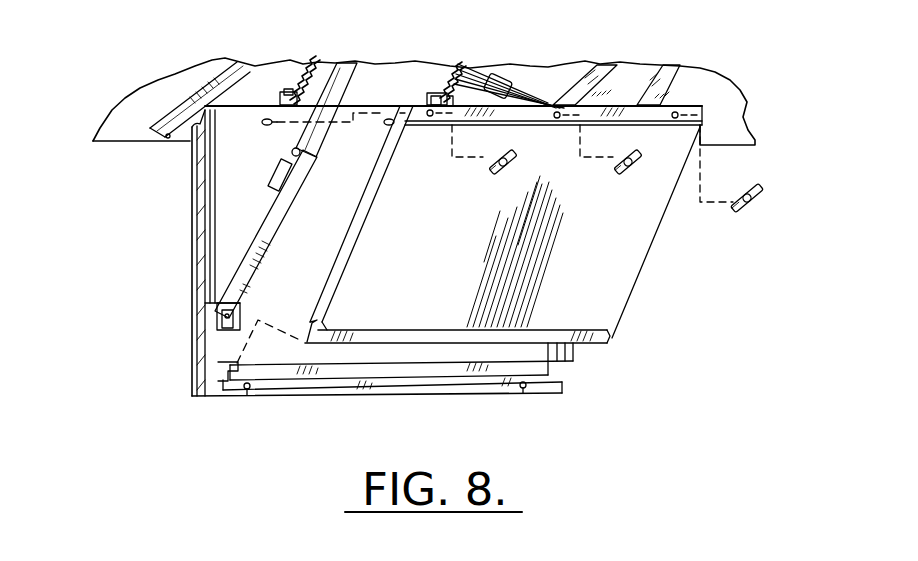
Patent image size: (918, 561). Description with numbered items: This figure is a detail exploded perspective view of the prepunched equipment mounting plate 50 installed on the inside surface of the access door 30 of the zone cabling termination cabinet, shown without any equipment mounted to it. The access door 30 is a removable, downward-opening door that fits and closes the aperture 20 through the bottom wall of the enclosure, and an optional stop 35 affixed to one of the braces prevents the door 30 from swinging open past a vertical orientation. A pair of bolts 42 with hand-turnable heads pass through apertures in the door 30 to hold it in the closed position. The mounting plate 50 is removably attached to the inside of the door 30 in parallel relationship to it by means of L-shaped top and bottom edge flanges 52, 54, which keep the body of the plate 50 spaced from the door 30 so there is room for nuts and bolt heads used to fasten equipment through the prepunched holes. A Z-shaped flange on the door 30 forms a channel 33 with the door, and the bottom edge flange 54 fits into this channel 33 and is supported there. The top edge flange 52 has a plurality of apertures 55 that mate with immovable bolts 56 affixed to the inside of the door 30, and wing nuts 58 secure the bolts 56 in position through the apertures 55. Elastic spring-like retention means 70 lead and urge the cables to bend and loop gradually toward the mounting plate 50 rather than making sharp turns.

The aperture 20 is at (627, 95).
The access door 30 is at (240, 212).
The channel 33 is at (224, 367).
The stop 35 is at (558, 373).
The bolts 42 is at (248, 392).
The equipment mounting plate 50 is at (607, 287).
The top edge flange 52 is at (667, 113).
The bottom edge flange 54 is at (610, 343).
The apertures 55 is at (428, 97).
The immovable bolts 56 is at (267, 125).
The wing nuts 58 is at (625, 175).
The elastic spring-like retention means 70 is at (297, 72).